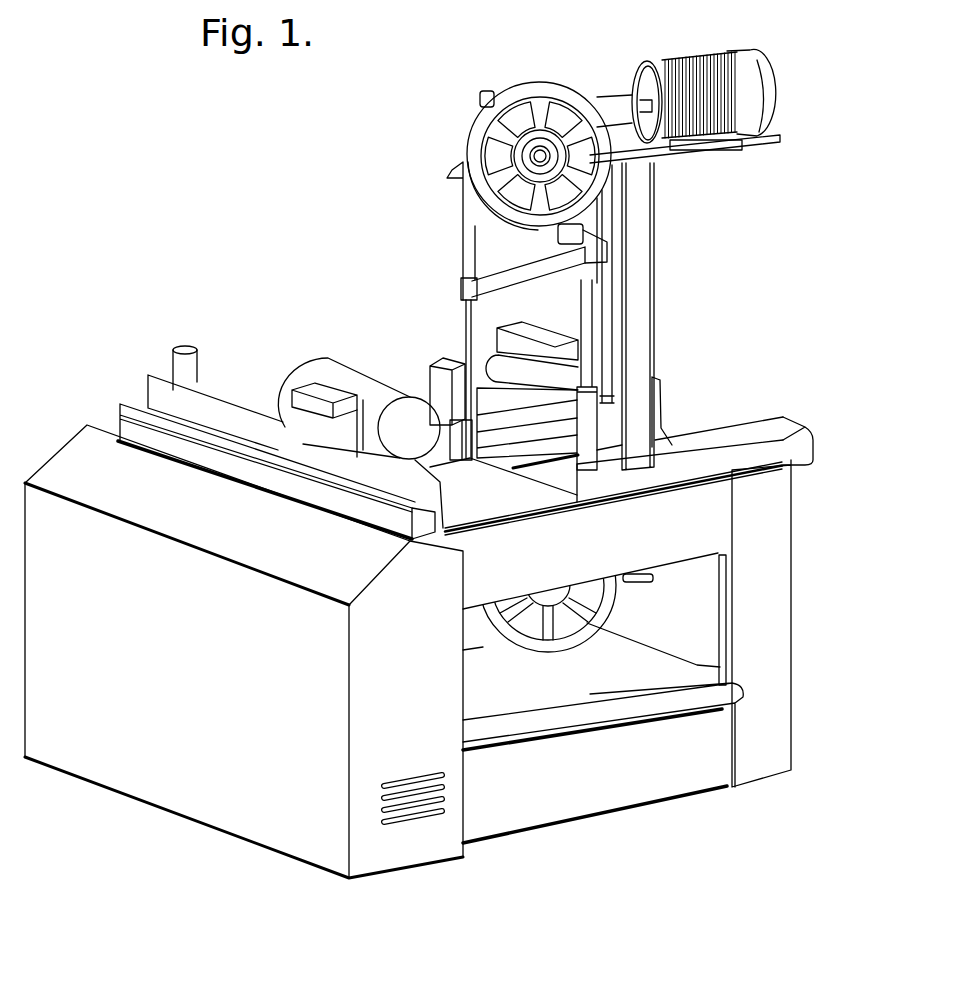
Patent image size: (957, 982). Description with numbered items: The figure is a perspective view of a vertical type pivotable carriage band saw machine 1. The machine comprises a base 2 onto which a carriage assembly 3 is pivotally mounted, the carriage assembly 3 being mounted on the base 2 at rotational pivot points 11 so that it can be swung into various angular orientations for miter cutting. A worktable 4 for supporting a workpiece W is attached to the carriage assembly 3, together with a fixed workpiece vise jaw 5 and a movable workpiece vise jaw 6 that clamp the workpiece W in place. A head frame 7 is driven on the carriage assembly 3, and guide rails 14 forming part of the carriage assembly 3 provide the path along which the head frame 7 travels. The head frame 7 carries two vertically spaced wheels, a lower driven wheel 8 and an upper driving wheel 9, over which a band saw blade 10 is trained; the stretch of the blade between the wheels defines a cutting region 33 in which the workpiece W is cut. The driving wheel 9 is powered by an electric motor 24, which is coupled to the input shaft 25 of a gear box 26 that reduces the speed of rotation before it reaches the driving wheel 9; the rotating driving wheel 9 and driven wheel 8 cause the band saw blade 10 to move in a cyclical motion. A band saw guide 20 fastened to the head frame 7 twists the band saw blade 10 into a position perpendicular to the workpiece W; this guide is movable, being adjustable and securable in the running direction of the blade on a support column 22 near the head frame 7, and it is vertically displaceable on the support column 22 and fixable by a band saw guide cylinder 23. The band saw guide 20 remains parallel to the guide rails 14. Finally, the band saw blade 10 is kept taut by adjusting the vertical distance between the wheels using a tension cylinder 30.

The band saw machine 1 is at (255, 259).
The base 2 is at (765, 687).
The carriage assembly 3 is at (660, 402).
The worktable 4 is at (483, 495).
The fixed workpiece vise jaw 5 is at (315, 386).
The movable workpiece vise jaw 6 is at (440, 378).
The head frame 7 is at (604, 214).
The driven wheel 8 is at (541, 643).
The driving wheel 9 is at (537, 86).
The band saw blade 10 is at (458, 250).
The rotational pivot points 11 is at (672, 440).
The guide rails 14 is at (549, 410).
The band saw guide 20 is at (477, 288).
The support column 22 is at (637, 300).
The band saw guide cylinder 23 is at (587, 430).
The electric motor 24 is at (754, 92).
The input shaft 25 is at (612, 100).
The gear box 26 is at (487, 97).
The tension cylinder 30 is at (574, 228).
The cutting region 33 is at (450, 322).
The workpiece W is at (326, 368).